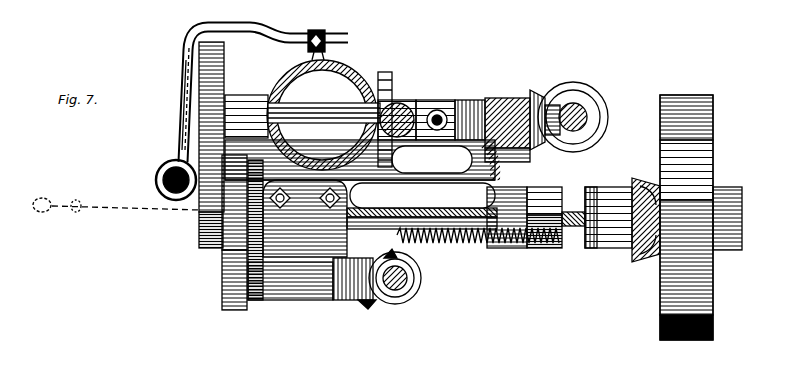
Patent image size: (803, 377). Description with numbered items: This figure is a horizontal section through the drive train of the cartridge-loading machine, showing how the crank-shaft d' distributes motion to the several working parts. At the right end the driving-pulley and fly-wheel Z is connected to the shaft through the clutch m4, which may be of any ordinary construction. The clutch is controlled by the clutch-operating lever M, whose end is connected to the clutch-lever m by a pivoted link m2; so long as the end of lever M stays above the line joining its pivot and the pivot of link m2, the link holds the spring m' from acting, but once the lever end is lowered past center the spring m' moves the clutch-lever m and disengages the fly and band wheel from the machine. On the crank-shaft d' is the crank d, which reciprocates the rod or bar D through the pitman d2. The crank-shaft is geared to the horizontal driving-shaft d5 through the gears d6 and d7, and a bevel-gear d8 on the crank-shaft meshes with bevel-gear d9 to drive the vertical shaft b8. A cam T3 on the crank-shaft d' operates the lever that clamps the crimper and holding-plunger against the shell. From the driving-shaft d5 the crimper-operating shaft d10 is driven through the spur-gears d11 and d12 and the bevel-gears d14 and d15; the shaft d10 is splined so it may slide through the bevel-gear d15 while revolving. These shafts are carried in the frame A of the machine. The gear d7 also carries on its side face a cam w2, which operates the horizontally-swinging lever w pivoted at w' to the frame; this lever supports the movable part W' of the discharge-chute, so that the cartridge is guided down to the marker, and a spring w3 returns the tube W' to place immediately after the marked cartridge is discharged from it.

The horizontally-swinging lever w is at (265, 85).
The pivot w' is at (320, 33).
The cam w2 is at (185, 100).
The spring w3 is at (198, 170).
The movable part of discharge-chute W' is at (155, 180).
The gear d7 is at (199, 146).
The gear d6 is at (199, 235).
The spur-gear d11 is at (236, 220).
The spur-gear d12 is at (232, 283).
The frame A is at (352, 76).
The crank-shaft d' is at (302, 124).
The cam T3 is at (387, 97).
The rod or bar D is at (417, 101).
The crank d is at (438, 104).
The pitman d2 is at (462, 103).
The bevel-gear d8 is at (538, 92).
The bevel-gear d9 is at (567, 94).
The vertical shaft b8 is at (580, 108).
The horizontal driving-shaft d5 is at (410, 205).
The clutch-operating lever M is at (310, 228).
The bevel-gear d14 is at (364, 304).
The crimper-operating shaft d10 is at (408, 284).
The bevel-gear d15 is at (392, 304).
The spring m' is at (478, 247).
The pivoted link m2 is at (489, 250).
The clutch-lever m is at (597, 227).
The clutch m4 is at (636, 258).
The driving-pulley and fly-wheel Z is at (701, 217).